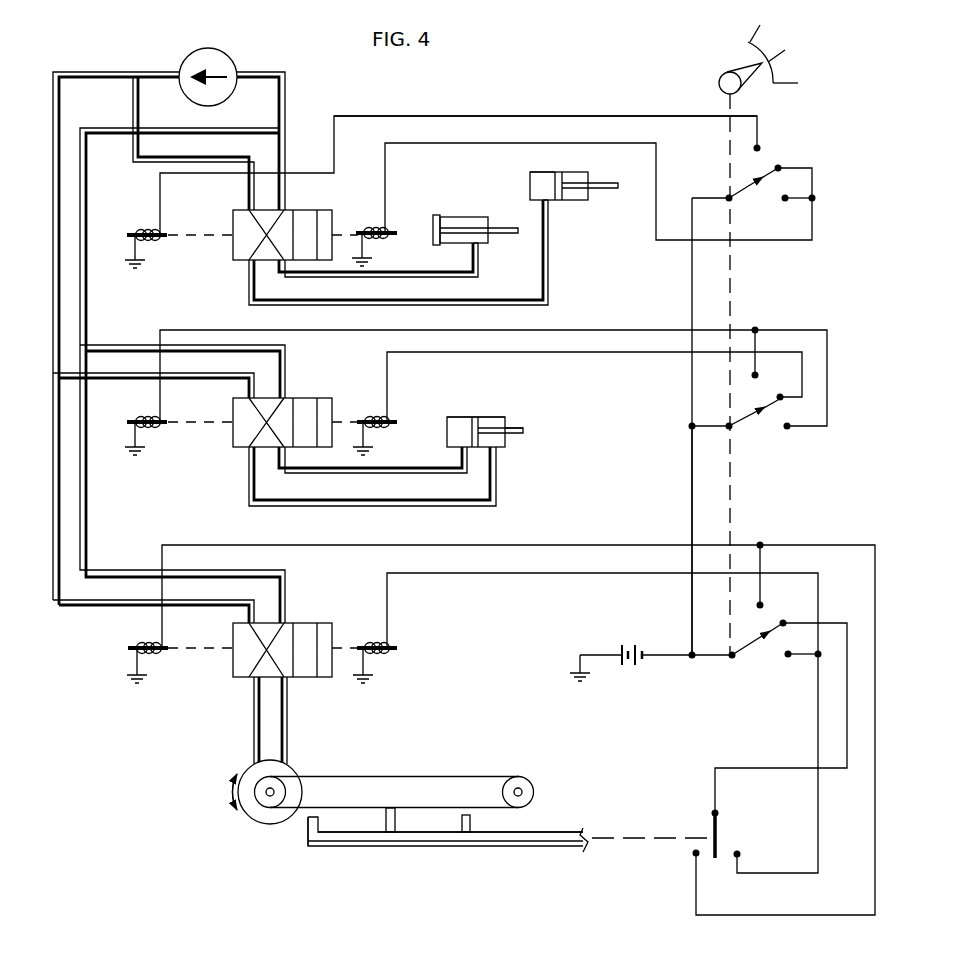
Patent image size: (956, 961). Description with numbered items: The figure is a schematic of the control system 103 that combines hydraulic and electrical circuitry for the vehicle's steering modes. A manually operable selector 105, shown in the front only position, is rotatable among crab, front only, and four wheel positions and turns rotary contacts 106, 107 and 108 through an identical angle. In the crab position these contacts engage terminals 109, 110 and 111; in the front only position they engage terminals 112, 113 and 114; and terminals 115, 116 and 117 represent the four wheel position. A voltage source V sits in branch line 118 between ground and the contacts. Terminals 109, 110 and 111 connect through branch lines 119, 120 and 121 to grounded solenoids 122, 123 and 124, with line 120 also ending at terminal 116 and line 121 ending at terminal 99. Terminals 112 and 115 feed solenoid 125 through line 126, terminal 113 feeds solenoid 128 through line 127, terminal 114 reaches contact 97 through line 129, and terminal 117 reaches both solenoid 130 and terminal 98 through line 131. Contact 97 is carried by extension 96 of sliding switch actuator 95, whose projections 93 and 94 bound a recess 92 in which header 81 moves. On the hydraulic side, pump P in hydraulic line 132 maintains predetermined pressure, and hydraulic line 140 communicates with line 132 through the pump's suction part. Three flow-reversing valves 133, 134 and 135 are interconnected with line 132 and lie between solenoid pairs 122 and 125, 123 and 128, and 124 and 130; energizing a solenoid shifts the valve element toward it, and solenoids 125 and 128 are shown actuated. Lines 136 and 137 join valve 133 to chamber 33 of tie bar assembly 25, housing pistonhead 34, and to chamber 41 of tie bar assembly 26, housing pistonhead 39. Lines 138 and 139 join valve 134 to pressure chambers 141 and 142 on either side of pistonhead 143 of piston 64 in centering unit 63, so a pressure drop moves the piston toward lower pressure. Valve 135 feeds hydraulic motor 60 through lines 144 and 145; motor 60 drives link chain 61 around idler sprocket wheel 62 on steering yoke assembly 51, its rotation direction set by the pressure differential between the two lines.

The hydraulic pump P is at (221, 56).
The hydraulic line 132 is at (117, 72).
The hydraulic line 137 is at (135, 103).
The hydraulic line 140 is at (287, 97).
The hydraulic line 136 is at (445, 272).
The hydraulic line 138 is at (433, 473).
The hydraulic line 139 is at (390, 507).
The hydraulic line 144 is at (253, 740).
The hydraulic line 145 is at (288, 725).
The flow-reversing valve 133 is at (229, 261).
The flow-reversing valve 134 is at (239, 453).
The flow-reversing valve 135 is at (230, 678).
The solenoid 122 is at (146, 224).
The solenoid 123 is at (146, 412).
The solenoid 124 is at (145, 640).
The solenoid 125 is at (371, 215).
The solenoid 128 is at (369, 411).
The solenoid 130 is at (370, 638).
The tie bar assembly 25 is at (461, 213).
The pistonhead 34 is at (436, 216).
The chamber 33 is at (480, 238).
The tie bar assembly 26 is at (582, 170).
The chamber 41 is at (541, 176).
The pistonhead 39 is at (574, 200).
The piston and cylinder centering unit 63 is at (492, 412).
The pressure chamber 141 is at (452, 437).
The pistonhead 143 is at (478, 416).
The pressure chamber 142 is at (495, 425).
The hydraulic piston 64 is at (518, 434).
The hydraulic-type motor 60 is at (258, 817).
The steering yoke assembly 51 is at (414, 771).
The link chain 61 is at (490, 775).
The idler sprocket wheel 62 is at (525, 788).
The sliding switch actuator 95 is at (379, 850).
The projection 93 is at (305, 825).
The recess 92 is at (433, 828).
The header 81 is at (384, 817).
The projection 94 is at (472, 820).
The extension 96 is at (668, 838).
The manually operable selector 105 is at (719, 88).
The branch line 119 is at (447, 113).
The control system 103 is at (572, 108).
The terminal 109 is at (760, 147).
The line 126 is at (656, 232).
The terminal 112 is at (781, 166).
The terminal 115 is at (789, 196).
The rotary contact 106 is at (747, 185).
The branch line 120 is at (642, 328).
The terminal 110 is at (757, 376).
The line 127 is at (663, 352).
The terminal 113 is at (777, 405).
The rotary contact 107 is at (749, 412).
The terminal 116 is at (789, 429).
The branch line 118 is at (692, 481).
The branch line 121 is at (578, 545).
The line 131 is at (595, 574).
The terminal 111 is at (762, 604).
The terminal 114 is at (788, 621).
The rotary contact 108 is at (750, 650).
The terminal 117 is at (788, 660).
The line 129 is at (763, 767).
The voltage source V is at (631, 649).
The contact 97 is at (718, 832).
The terminal 98 is at (742, 854).
The terminal 99 is at (695, 855).